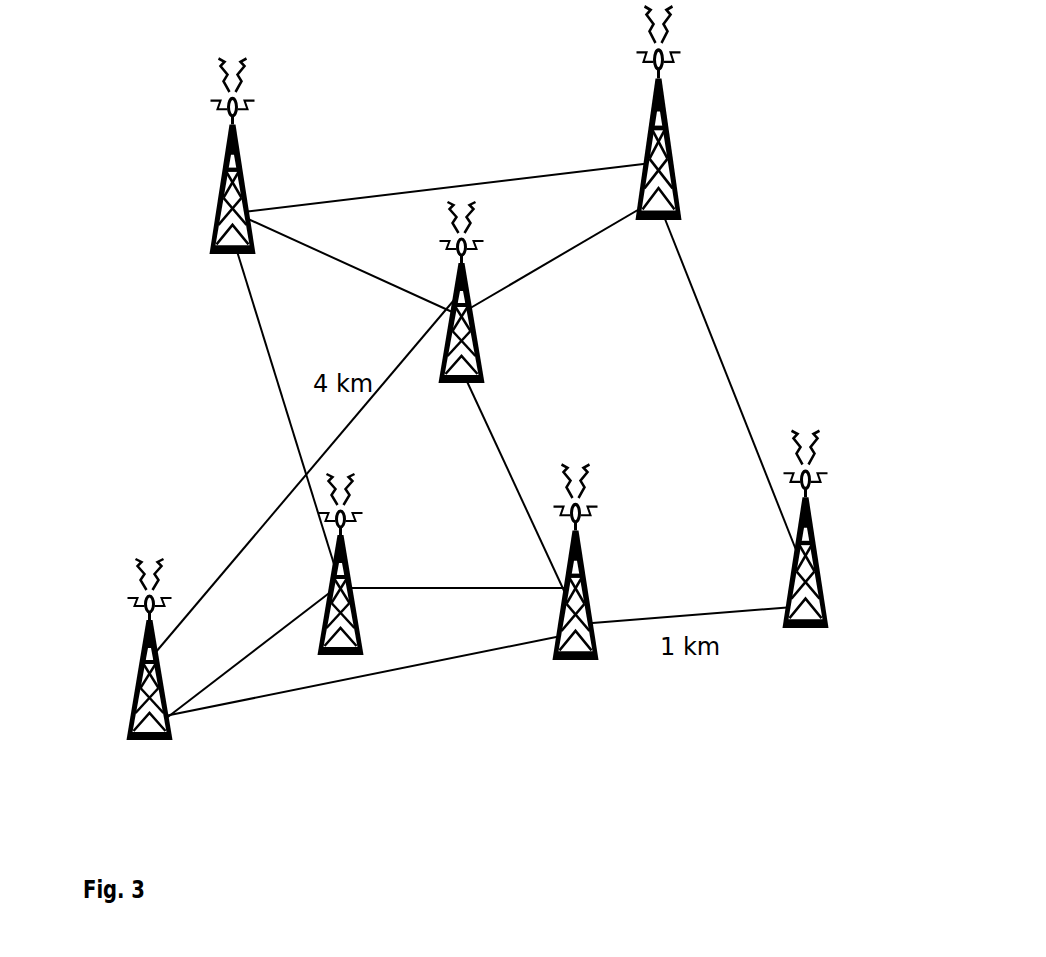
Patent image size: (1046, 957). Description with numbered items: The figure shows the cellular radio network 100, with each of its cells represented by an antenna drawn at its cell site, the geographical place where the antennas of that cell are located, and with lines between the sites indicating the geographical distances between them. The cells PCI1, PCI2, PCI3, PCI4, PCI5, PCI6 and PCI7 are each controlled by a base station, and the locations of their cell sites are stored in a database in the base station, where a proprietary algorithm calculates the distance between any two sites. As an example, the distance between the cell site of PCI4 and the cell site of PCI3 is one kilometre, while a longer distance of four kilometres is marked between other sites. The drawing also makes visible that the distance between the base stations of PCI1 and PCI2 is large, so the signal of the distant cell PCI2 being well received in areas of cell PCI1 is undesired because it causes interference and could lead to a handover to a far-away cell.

The cellular radio network 100 is at (786, 255).
The cell PCI1 is at (490, 295).
The cell PCI2 is at (145, 665).
The cell PCI3 is at (802, 551).
The cell PCI4 is at (572, 579).
The cell PCI5 is at (369, 567).
The cell PCI6 is at (195, 178).
The cell PCI7 is at (692, 113).